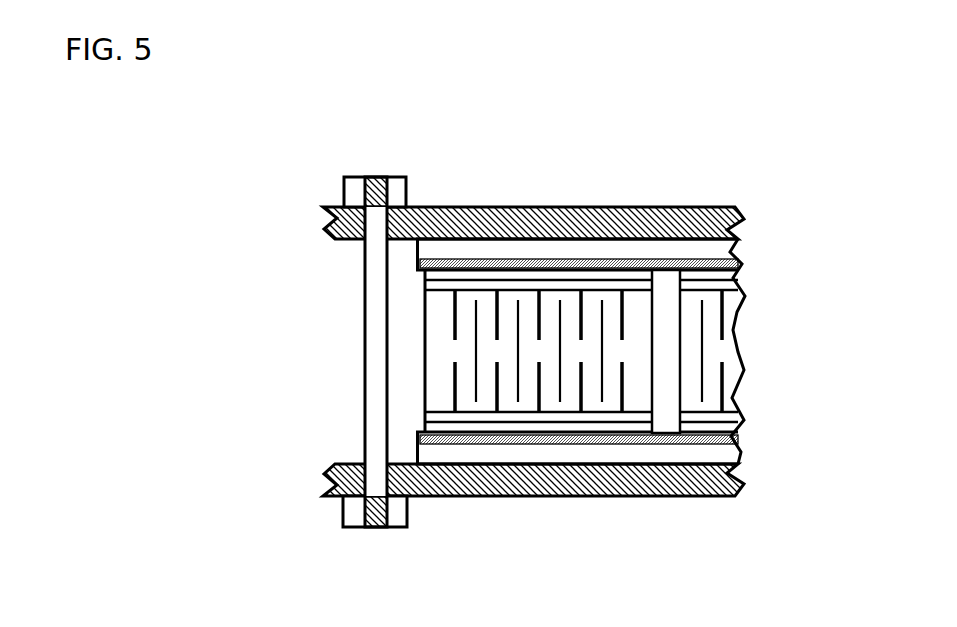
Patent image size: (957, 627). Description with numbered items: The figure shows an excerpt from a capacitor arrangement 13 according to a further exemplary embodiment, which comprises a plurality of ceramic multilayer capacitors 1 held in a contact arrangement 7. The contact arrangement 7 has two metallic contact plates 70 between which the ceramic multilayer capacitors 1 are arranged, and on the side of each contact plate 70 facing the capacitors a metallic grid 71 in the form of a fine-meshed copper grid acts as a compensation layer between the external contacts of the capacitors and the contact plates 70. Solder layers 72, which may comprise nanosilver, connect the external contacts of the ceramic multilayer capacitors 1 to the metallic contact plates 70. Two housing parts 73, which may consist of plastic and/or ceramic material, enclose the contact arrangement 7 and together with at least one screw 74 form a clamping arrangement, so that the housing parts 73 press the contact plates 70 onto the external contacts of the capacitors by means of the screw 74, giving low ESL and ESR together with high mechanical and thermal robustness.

The ceramic multilayer capacitor 1 is at (400, 368).
The contact arrangement 7 is at (663, 189).
The capacitor arrangement 13 is at (500, 70).
The metallic contact plate 70 is at (572, 249).
The metallic grid 71 is at (492, 268).
The solder layer 72 is at (578, 355).
The housing part 73 is at (744, 220).
The screw 74 is at (368, 325).